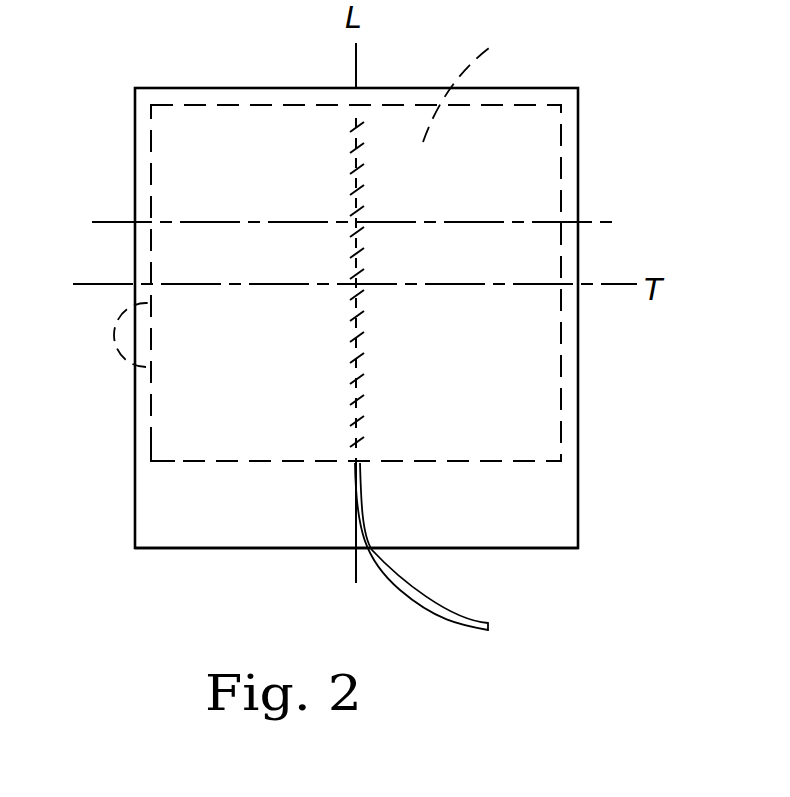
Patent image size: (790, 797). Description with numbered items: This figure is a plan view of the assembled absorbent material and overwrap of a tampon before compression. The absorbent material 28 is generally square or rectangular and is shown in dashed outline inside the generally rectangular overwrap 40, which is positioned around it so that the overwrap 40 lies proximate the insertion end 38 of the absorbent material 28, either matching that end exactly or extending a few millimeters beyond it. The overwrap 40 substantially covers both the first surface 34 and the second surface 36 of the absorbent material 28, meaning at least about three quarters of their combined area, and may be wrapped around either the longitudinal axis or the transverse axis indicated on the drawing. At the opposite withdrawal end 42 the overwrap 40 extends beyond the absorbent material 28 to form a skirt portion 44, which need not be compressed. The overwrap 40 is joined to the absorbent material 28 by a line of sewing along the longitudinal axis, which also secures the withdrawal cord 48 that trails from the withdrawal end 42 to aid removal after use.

The absorbent material 28 is at (478, 80).
The first surface 34 is at (208, 428).
The second surface 36 is at (146, 367).
The insertion end 38 is at (313, 105).
The overwrap 40 is at (548, 98).
The withdrawal end 42 is at (170, 462).
The skirt portion 44 is at (442, 530).
The withdrawal cord 48 is at (420, 617).